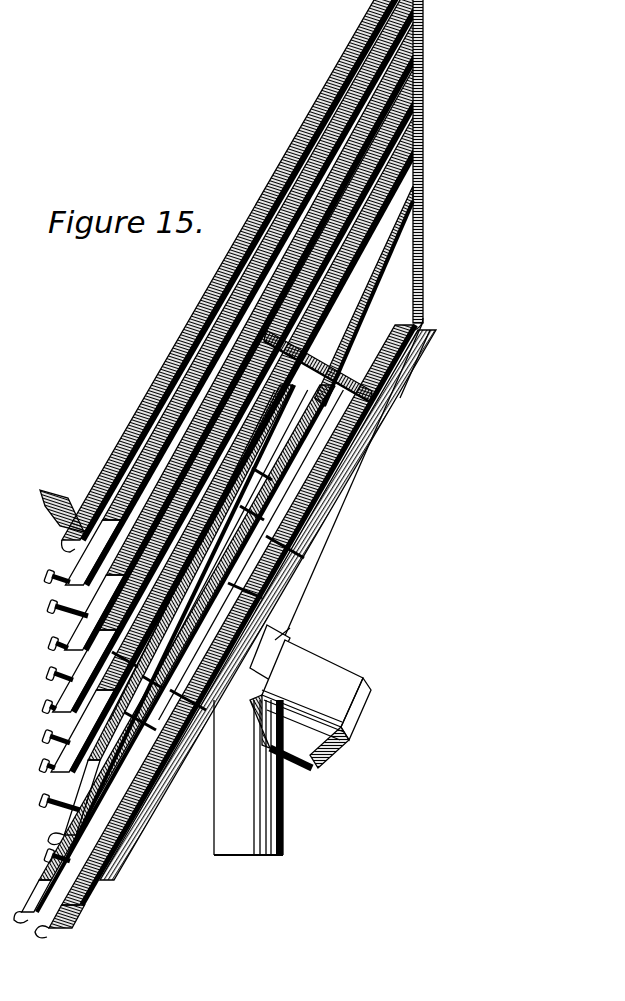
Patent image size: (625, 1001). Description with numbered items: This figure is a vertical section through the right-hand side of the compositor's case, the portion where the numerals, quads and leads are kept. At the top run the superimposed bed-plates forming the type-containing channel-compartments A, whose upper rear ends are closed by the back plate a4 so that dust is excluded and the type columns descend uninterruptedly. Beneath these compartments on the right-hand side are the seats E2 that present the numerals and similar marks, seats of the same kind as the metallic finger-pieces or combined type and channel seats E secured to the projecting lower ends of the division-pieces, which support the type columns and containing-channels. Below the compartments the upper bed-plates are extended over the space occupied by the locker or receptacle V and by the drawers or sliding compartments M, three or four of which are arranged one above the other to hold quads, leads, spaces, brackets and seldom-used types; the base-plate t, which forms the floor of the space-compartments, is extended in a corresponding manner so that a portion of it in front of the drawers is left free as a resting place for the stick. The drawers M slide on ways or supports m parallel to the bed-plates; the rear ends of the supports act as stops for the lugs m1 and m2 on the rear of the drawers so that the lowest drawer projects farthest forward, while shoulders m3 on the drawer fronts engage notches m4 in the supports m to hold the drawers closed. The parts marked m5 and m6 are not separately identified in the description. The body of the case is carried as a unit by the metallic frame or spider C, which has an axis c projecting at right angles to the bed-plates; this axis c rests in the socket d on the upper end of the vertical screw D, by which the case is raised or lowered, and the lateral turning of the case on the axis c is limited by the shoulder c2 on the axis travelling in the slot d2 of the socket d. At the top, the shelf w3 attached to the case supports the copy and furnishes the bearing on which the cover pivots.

The type-containing channel-compartments A is at (277, 386).
The back plate a4 is at (430, 165).
The locker V is at (338, 296).
The base-plate t is at (330, 478).
The shelf w3 is at (60, 501).
The drawers M is at (178, 654).
The seats E2 is at (60, 621).
The combined type and channel seats E is at (56, 781).
The supports m is at (237, 533).
The lug m1 is at (283, 546).
The lug m2 is at (254, 505).
The shoulder m3 is at (95, 918).
The notch m4 is at (188, 698).
The cross piece m5 is at (145, 721).
The cross piece m6 is at (152, 678).
The slot d2 is at (267, 652).
The shoulder c2 is at (290, 628).
The socket d is at (306, 704).
The axis c is at (340, 723).
The vertical screw D is at (248, 777).
The frame C is at (268, 605).